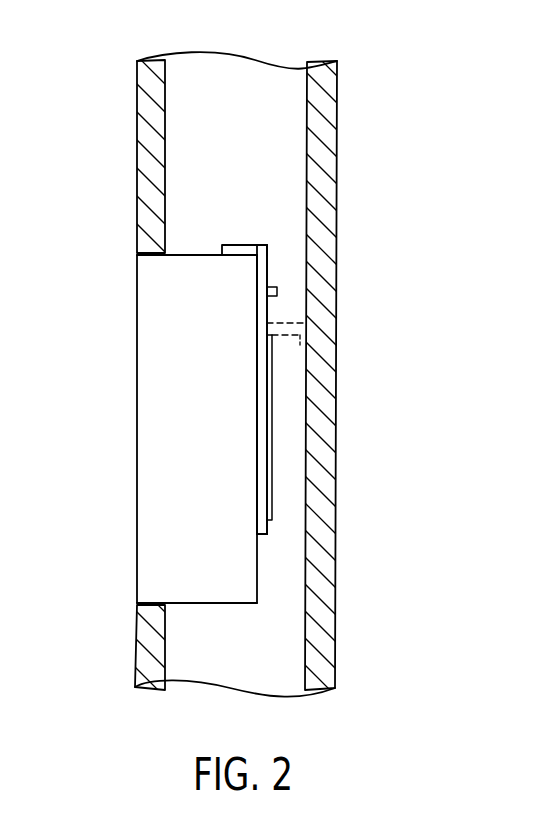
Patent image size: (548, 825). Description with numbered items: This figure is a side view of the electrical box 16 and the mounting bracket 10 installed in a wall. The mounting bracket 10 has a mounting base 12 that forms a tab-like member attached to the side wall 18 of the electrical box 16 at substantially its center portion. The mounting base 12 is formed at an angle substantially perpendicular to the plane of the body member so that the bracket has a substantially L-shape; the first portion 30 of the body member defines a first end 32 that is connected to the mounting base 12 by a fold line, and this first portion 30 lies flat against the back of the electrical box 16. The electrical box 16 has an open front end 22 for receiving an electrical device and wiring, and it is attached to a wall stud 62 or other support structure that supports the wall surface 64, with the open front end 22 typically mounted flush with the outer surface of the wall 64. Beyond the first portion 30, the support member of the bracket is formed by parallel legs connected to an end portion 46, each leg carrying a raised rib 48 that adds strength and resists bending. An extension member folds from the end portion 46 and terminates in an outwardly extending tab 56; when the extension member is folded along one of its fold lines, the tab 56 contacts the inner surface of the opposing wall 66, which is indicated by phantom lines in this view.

The mounting bracket 10 is at (267, 242).
The mounting base 12 is at (235, 248).
The electrical box 16 is at (225, 605).
The side wall 18 is at (180, 253).
The open front end 22 is at (137, 360).
The first portion 30 is at (268, 268).
The first end 32 is at (268, 252).
The end portion 46 is at (268, 528).
The raised rib 48 is at (272, 508).
The tab 56 is at (277, 292).
The wall stud 62 is at (280, 111).
The wall surface 64 is at (147, 140).
The opposing wall 66 is at (323, 157).